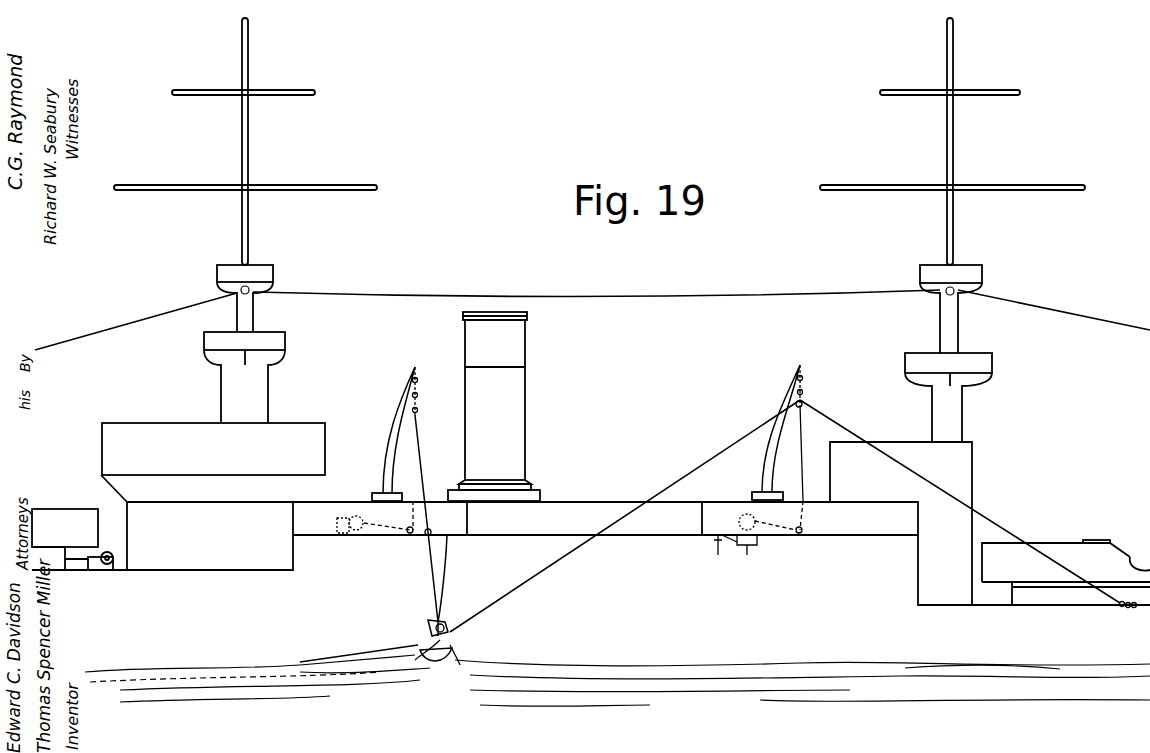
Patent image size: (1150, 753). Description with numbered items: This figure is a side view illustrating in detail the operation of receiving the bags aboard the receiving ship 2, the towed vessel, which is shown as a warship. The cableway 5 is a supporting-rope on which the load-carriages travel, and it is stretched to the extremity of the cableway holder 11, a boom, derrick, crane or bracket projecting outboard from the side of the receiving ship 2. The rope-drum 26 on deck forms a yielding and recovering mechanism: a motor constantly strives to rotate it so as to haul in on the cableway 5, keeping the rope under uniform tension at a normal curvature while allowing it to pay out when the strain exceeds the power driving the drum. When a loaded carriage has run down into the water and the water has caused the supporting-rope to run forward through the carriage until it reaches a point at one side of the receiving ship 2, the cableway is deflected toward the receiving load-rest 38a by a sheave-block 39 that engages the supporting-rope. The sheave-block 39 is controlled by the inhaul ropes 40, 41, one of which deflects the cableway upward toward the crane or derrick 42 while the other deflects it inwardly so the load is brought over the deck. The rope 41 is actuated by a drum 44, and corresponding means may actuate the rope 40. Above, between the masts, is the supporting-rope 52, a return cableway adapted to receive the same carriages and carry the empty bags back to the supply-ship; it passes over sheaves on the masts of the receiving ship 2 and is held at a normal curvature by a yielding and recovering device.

The receiving ship 2 is at (591, 317).
The cableway 5 is at (804, 472).
The cableway holder 11 is at (794, 383).
The rope-drum 26 is at (745, 514).
The receiving load-rest 38a is at (427, 535).
The sheave-block 39 is at (452, 632).
The inhaul rope 40 is at (444, 572).
The inhaul rope 41 is at (434, 595).
The crane or derrick 42 is at (411, 372).
The drum 44 is at (355, 515).
The supporting-rope 52 is at (781, 295).